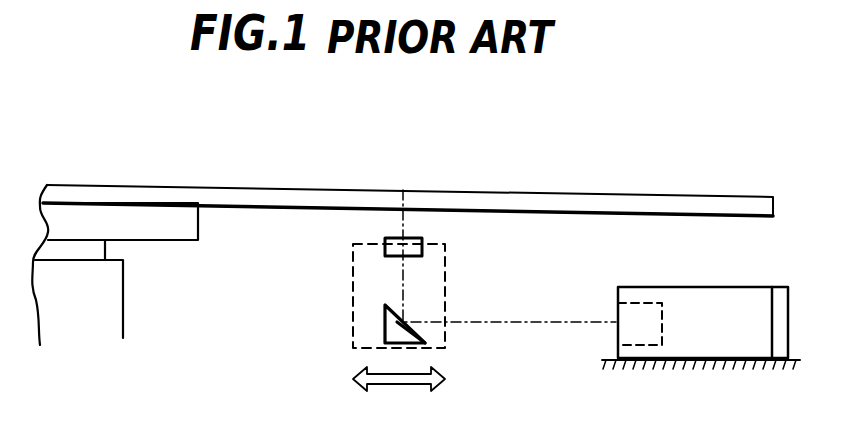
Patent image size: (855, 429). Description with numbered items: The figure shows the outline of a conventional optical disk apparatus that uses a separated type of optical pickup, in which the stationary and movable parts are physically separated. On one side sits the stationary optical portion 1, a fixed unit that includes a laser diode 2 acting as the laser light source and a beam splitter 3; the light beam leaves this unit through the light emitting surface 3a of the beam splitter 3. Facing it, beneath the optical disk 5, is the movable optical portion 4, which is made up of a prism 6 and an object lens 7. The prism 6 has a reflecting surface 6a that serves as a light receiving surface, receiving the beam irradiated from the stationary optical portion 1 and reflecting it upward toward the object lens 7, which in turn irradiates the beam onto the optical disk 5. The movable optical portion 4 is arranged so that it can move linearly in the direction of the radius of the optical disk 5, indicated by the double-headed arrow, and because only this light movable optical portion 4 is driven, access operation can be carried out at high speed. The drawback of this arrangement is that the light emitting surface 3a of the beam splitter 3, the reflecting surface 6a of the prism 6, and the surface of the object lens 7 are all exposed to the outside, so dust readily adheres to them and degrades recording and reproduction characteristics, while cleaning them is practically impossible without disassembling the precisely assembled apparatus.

The stationary optical portion 1 is at (678, 278).
The laser diode 2 is at (780, 323).
The beam splitter 3 is at (640, 316).
The light emitting surface 3a is at (617, 332).
The movable optical portion 4 is at (447, 349).
The optical disk 5 is at (505, 203).
The prism 6 is at (392, 327).
The reflecting surface 6a is at (413, 331).
The object lens 7 is at (387, 240).